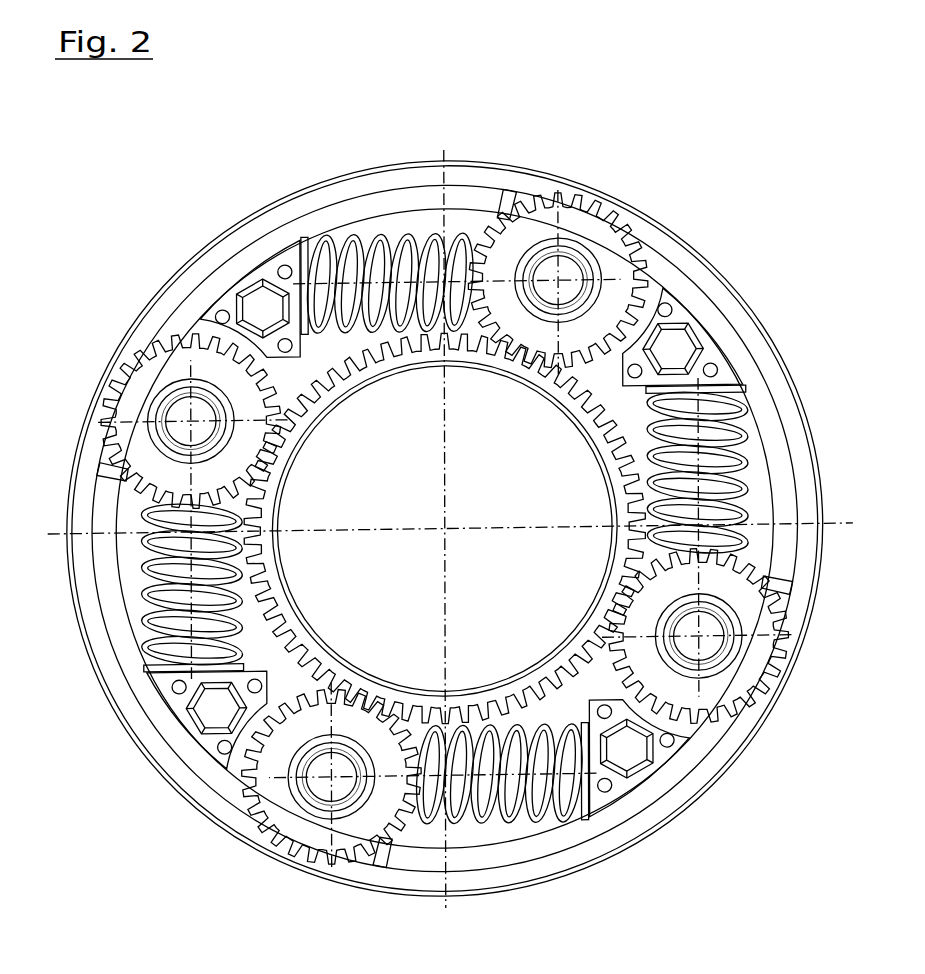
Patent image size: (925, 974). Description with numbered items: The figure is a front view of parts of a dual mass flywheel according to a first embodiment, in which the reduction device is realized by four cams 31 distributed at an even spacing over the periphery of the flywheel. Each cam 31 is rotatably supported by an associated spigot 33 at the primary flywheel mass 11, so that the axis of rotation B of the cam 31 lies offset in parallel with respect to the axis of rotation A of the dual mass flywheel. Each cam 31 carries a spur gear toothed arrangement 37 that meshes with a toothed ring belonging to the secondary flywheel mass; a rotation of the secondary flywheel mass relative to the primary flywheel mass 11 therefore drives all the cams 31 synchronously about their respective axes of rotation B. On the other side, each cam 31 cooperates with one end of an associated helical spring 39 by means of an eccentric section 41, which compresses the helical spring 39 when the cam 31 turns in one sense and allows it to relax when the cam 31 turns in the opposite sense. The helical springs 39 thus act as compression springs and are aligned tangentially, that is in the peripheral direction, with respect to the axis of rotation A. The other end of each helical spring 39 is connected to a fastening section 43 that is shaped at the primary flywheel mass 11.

The primary flywheel mass 11 is at (305, 210).
The cam 31 is at (476, 536).
The spigot 33 is at (573, 270).
The spur gear toothed arrangement 37 is at (540, 203).
The helical spring 39 is at (450, 253).
The eccentric section 41 is at (187, 333).
The fastening section 43 is at (267, 310).
The axis of rotation of the dual mass flywheel A is at (447, 530).
The axis of rotation of the cam B is at (187, 413).